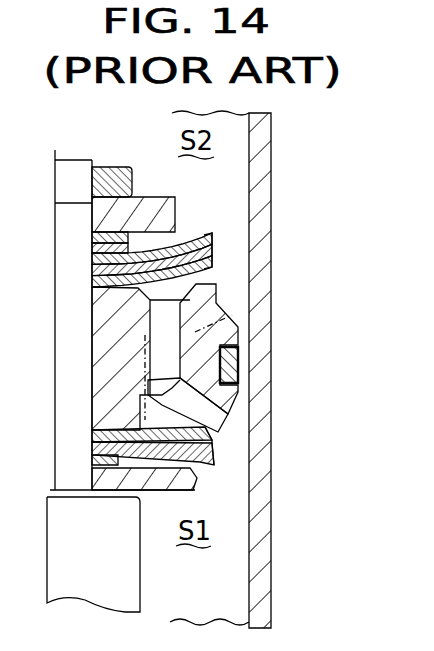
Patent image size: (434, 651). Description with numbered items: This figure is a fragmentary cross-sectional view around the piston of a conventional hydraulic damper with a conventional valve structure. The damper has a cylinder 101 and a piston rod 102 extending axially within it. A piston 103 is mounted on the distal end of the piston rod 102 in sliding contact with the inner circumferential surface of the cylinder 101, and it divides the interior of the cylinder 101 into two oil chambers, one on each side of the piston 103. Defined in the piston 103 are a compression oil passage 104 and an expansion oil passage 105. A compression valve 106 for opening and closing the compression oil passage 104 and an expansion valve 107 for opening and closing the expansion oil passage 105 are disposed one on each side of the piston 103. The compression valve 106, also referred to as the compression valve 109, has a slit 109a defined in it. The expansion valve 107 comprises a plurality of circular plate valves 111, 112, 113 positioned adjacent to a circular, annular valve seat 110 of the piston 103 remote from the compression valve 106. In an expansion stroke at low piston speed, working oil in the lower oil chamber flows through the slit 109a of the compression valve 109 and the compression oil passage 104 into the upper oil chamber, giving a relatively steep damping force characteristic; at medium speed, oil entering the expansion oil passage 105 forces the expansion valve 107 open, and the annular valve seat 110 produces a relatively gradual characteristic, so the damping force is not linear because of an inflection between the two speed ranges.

The cylinder 101 is at (258, 312).
The piston rod 102 is at (126, 568).
The piston 103 is at (240, 412).
The compression oil passage 104 is at (240, 385).
The expansion oil passage 105 is at (189, 345).
The compression valve 106 is at (216, 487).
The expansion valve 107 is at (226, 239).
The compression valve 109 is at (224, 466).
The slit 109a is at (215, 441).
The valve seat 110 is at (213, 276).
The plate valve 111 is at (212, 262).
The plate valve 112 is at (212, 248).
The plate valve 113 is at (206, 233).